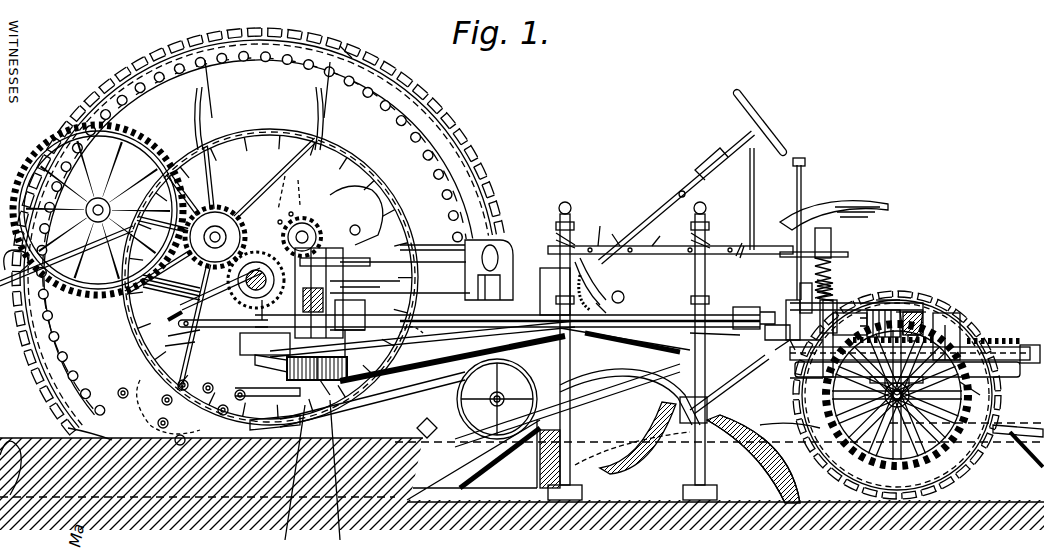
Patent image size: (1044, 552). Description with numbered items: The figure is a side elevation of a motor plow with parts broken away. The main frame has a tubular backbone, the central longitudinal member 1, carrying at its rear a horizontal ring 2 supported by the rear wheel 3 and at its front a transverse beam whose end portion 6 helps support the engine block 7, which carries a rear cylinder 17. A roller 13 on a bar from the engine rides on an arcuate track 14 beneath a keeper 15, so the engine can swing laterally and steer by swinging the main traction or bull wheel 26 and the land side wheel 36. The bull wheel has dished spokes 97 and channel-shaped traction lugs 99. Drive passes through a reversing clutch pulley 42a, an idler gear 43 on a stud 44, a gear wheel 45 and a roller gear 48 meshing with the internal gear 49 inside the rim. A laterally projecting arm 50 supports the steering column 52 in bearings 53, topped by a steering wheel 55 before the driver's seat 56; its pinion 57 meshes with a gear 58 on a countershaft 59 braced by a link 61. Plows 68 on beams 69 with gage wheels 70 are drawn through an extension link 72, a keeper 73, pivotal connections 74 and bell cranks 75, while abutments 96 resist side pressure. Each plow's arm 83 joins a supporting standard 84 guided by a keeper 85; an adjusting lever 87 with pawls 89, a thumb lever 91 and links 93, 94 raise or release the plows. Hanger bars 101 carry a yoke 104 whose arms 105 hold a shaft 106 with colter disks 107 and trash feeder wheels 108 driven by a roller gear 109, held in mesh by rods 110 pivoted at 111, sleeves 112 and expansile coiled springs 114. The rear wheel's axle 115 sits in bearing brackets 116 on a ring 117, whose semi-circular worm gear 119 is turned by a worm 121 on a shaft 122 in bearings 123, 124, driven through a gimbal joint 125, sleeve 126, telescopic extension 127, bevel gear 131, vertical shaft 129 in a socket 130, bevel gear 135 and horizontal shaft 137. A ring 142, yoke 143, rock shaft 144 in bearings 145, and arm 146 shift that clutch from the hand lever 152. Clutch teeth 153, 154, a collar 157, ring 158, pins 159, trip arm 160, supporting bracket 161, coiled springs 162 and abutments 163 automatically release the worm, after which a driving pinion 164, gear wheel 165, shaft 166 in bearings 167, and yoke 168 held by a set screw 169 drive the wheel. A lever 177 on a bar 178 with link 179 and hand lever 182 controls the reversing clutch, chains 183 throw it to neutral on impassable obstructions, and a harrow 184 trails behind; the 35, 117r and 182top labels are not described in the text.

The central longitudinal member 1 is at (507, 348).
The ring 2 is at (1032, 343).
The rear wheel 3 is at (978, 478).
The end portion 6 is at (271, 363).
The engine block 7 is at (140, 292).
The roller 13 is at (240, 342).
The arcuate track 14 is at (220, 390).
The keeper 15 is at (263, 310).
The cylinder 17 is at (456, 270).
The main traction or bull wheel 26 is at (66, 378).
The link 35 is at (223, 316).
The land side wheel 36 is at (405, 190).
The reversing clutch pulley 42a is at (291, 186).
The idler gear 43 is at (270, 277).
The stud 44 is at (228, 214).
The gear wheel 45 is at (52, 158).
The roller gear 48 is at (98, 210).
The internal gear 49 is at (246, 89).
The laterally projecting arm 50 is at (545, 330).
The steering column 52 is at (648, 226).
The bearings 53 is at (680, 190).
The steering wheel 55 is at (748, 105).
The driver's seat 56 is at (858, 202).
The pinion 57 is at (590, 274).
The gear 58 is at (609, 310).
The countershaft 59 is at (625, 296).
The link 61 is at (600, 284).
The plows 68 is at (660, 432).
The beam 69 is at (592, 396).
The gage wheel 70 is at (475, 446).
The extension link 72 is at (437, 428).
The keeper 73 is at (338, 476).
The pivotal connection 74 is at (332, 376).
The bell crank 75 is at (293, 478).
The rearwardly projecting arm 83 is at (700, 495).
The supporting standard 84 is at (706, 455).
The keeper 85 is at (708, 220).
The adjusting lever 87 is at (764, 256).
The pawls 89 is at (631, 236).
The thumb lever 91 is at (655, 234).
The link 93 is at (675, 250).
The link 94 is at (669, 235).
The abutment 96 is at (616, 369).
The spokes 97 is at (320, 104).
The traction lugs 99 is at (348, 52).
The hanger bars 101 is at (266, 381).
The yoke 104 is at (275, 425).
The arms 105 is at (155, 407).
The shaft 106 is at (176, 431).
The colter disks 107 is at (77, 430).
The trash feeder wheels 108 is at (184, 376).
The roller gear 109 is at (207, 378).
The rods 110 is at (168, 343).
The pivot 111 is at (121, 386).
The sleeves 112 is at (171, 285).
The expansile coiled springs 114 is at (171, 330).
The axle 115 is at (885, 400).
The bearing brackets 116 is at (910, 382).
The ring 117 is at (215, 300).
The wheel tooth ring 117r is at (970, 400).
The semi-circular worm gear 119 is at (1000, 345).
The worm 121 is at (892, 297).
The shaft 122 is at (962, 315).
The bearing 123 is at (985, 270).
The bearing 124 is at (770, 340).
The gimbal joint 125 is at (745, 330).
The sleeve 126 is at (700, 330).
The telescopic extension 127 is at (414, 337).
The vertical shaft 129 is at (365, 275).
The socket 130 is at (317, 367).
The bevel gear 131 is at (340, 322).
The bevel gear 135 is at (292, 211).
The horizontal shaft 137 is at (307, 231).
The ring 142 is at (256, 266).
The yoke 143 is at (352, 205).
The rock shaft 144 is at (360, 287).
The bearings 145 is at (345, 306).
The laterally projecting arm 146 is at (347, 343).
The hand lever 152 is at (750, 178).
The clutch teeth 153 is at (890, 300).
The clutch teeth 154 is at (920, 320).
The collar 157 is at (795, 360).
The ring 158 is at (790, 419).
The pins 159 is at (835, 285).
The trip arm 160 is at (822, 372).
The supporting bracket 161 is at (809, 325).
The coiled springs 162 is at (880, 385).
The abutments 163 is at (716, 385).
The driving pinion 164 is at (915, 310).
The gear wheel 165 is at (897, 407).
The shaft 166 is at (870, 310).
The bearings 167 is at (930, 320).
The yoke 168 is at (912, 310).
The set screw 169 is at (931, 299).
The lever 177 is at (319, 293).
The bar 178 is at (345, 265).
The link 179 is at (166, 315).
The hand lever 182 is at (316, 298).
The steering rod 182top is at (801, 165).
The chains 183 is at (610, 388).
The harrow 184 is at (1028, 426).